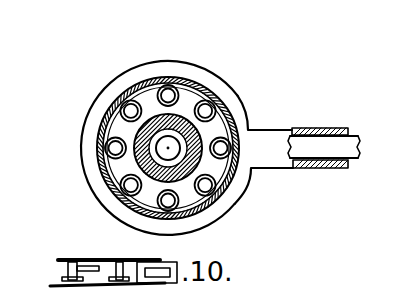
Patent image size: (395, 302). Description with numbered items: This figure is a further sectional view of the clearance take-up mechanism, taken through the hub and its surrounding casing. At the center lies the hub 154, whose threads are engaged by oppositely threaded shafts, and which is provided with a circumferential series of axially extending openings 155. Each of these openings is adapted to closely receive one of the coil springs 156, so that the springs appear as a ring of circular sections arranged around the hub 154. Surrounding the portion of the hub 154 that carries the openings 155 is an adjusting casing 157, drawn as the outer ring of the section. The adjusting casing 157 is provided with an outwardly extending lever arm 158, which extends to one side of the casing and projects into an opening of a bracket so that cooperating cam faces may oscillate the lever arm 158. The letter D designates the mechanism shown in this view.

The hub 154 is at (143, 125).
The axially extending openings 155 is at (192, 84).
The coil springs 156 is at (165, 87).
The adjusting casing 157 is at (101, 95).
The lever arm 158 is at (301, 128).
The device D is at (88, 183).